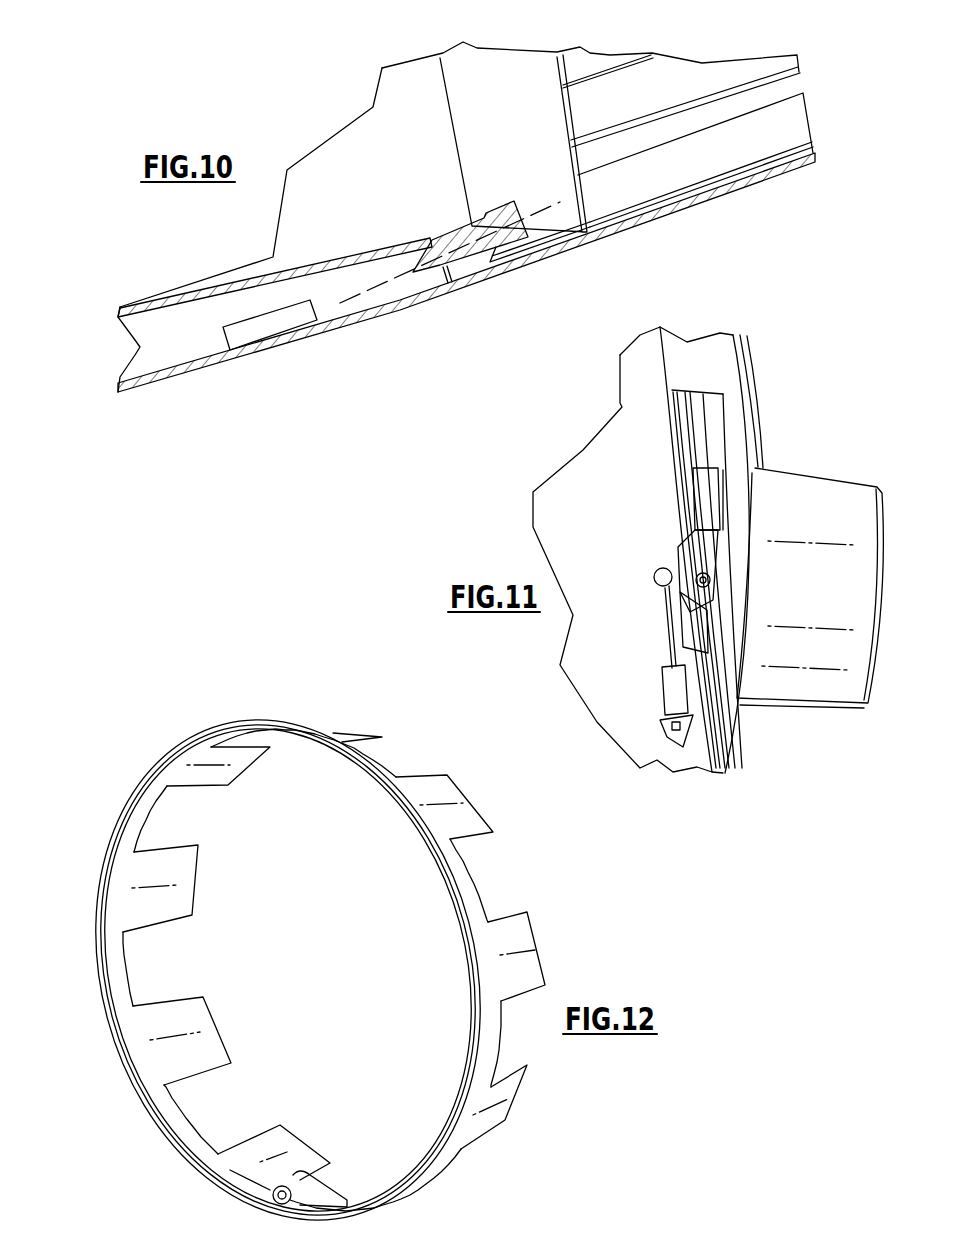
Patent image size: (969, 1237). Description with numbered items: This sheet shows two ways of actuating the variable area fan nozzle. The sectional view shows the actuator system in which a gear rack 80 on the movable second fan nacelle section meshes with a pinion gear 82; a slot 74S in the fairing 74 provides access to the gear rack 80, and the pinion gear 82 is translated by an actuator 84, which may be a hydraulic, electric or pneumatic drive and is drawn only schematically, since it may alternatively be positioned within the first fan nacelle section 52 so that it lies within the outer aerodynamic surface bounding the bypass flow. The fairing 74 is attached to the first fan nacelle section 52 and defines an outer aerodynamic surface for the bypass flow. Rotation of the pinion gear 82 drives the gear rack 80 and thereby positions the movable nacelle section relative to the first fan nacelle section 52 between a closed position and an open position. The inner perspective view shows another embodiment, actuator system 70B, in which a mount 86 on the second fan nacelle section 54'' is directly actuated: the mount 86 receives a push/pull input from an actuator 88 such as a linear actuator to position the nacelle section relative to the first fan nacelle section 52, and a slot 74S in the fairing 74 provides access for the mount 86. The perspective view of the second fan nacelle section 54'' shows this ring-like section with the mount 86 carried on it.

In FIG. 10, the first fan nacelle section 52 is at (368, 115).
In FIG. 10, the fairing 74 is at (485, 72).
In FIG. 11, the fairing 74 is at (705, 348).
In FIG. 10, the pinion gear 82 is at (487, 220).
In FIG. 10, the gear rack 80 is at (515, 250).
In FIG. 10, the actuator 84 is at (280, 330).
In FIG. 11, the actuator system 70B is at (815, 415).
In FIG. 11, the slot 74S is at (720, 408).
In FIG. 11, the mount 86 is at (712, 552).
In FIG. 12, the mount 86 is at (305, 1188).
In FIG. 11, the actuator 88 is at (667, 680).
In FIG. 12, the second fan nacelle section 54'' is at (328, 956).